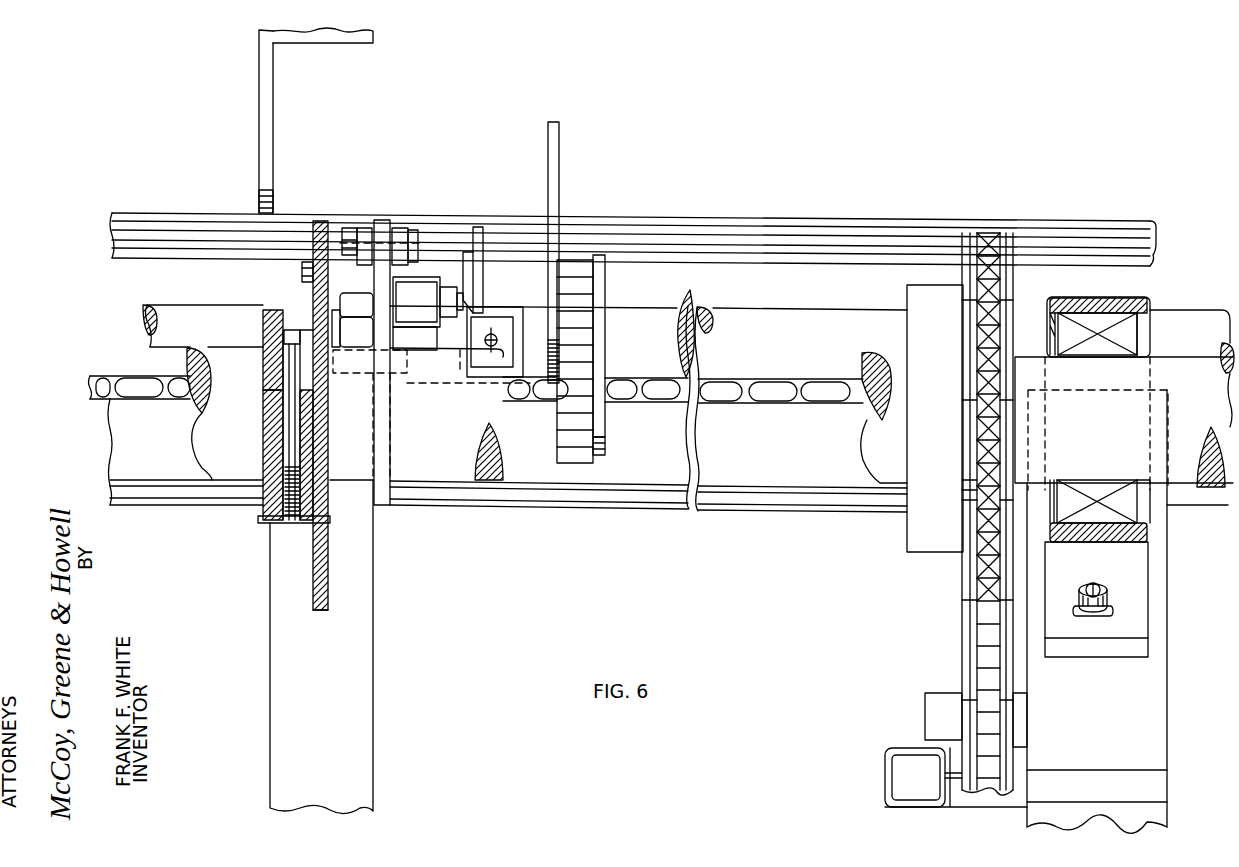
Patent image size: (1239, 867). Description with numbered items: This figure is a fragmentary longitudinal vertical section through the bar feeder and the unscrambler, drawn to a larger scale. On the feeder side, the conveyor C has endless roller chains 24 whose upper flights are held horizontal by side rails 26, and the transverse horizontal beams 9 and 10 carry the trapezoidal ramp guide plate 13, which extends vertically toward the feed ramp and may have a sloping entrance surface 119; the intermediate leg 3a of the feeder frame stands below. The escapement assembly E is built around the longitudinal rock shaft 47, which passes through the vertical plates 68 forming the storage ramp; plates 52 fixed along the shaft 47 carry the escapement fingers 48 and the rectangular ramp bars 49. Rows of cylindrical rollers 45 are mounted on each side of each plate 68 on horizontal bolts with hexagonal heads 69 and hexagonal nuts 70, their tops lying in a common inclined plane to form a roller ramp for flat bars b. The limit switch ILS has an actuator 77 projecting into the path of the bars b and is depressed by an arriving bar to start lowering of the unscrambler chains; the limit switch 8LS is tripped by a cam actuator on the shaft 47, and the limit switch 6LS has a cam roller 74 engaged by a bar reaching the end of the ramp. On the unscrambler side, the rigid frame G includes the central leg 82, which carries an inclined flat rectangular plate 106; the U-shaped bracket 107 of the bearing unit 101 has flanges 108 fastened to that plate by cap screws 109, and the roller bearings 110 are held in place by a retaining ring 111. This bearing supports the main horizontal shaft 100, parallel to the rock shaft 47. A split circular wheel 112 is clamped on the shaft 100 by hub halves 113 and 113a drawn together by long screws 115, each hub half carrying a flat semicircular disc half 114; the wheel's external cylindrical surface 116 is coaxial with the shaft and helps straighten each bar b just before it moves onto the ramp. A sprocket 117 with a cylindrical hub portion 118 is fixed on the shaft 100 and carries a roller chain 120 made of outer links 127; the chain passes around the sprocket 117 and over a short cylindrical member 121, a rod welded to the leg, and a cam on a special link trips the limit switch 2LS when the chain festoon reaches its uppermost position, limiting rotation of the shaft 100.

The bar b is at (911, 228).
The transverse horizontal beam 9 is at (365, 44).
The ramp guide plate 13 is at (270, 164).
The sloping surface 119 is at (259, 201).
The disc half 114 is at (318, 225).
The external cylindrical surface 116 is at (320, 612).
The hexagonal nuts 70 is at (350, 228).
The cylindrical rollers 45 is at (362, 228).
The vertical plates 68 is at (381, 221).
The hexagonal heads 69 is at (414, 232).
The escapement assembly E is at (377, 171).
The cam roller 74 is at (302, 266).
The limit switch 6LS is at (335, 303).
The hub half 113a is at (263, 313).
The hub half 113 is at (268, 433).
The long screws 115 is at (289, 350).
The split circular wheel 112 is at (263, 516).
The intermediate leg 3a is at (365, 706).
The rock shaft 47 is at (147, 350).
The conveyor C is at (88, 374).
The endless roller chains 24 is at (100, 393).
The horizontal shaft 100 is at (200, 456).
The side rails 26 is at (792, 490).
The limit switch ILS is at (413, 328).
The actuator 77 is at (480, 228).
The limit switch 8LS is at (511, 318).
The ramp bars 49 is at (559, 175).
The plates 52 is at (578, 440).
The escapement fingers 48 is at (606, 346).
The sprockets 117 is at (977, 323).
The cylindrical hub portion 118 is at (906, 540).
The roller chains 120 is at (963, 410).
The outer links 127 is at (965, 486).
The short cylindrical member 121 is at (925, 710).
The limit switch 2LS is at (890, 780).
The roller bearing 101 is at (1127, 300).
The retaining ring 111 is at (1056, 312).
The roller bearings 110 is at (1130, 337).
The U-shaped bracket 107 is at (1105, 542).
The transverse horizontal beam 10 is at (1183, 486).
The flanges 108 is at (1140, 630).
The cap screws 109 is at (1112, 592).
The inclined flat rectangular plate 106 is at (1160, 709).
The rigid frame G is at (1168, 684).
The central leg 82 is at (1158, 814).